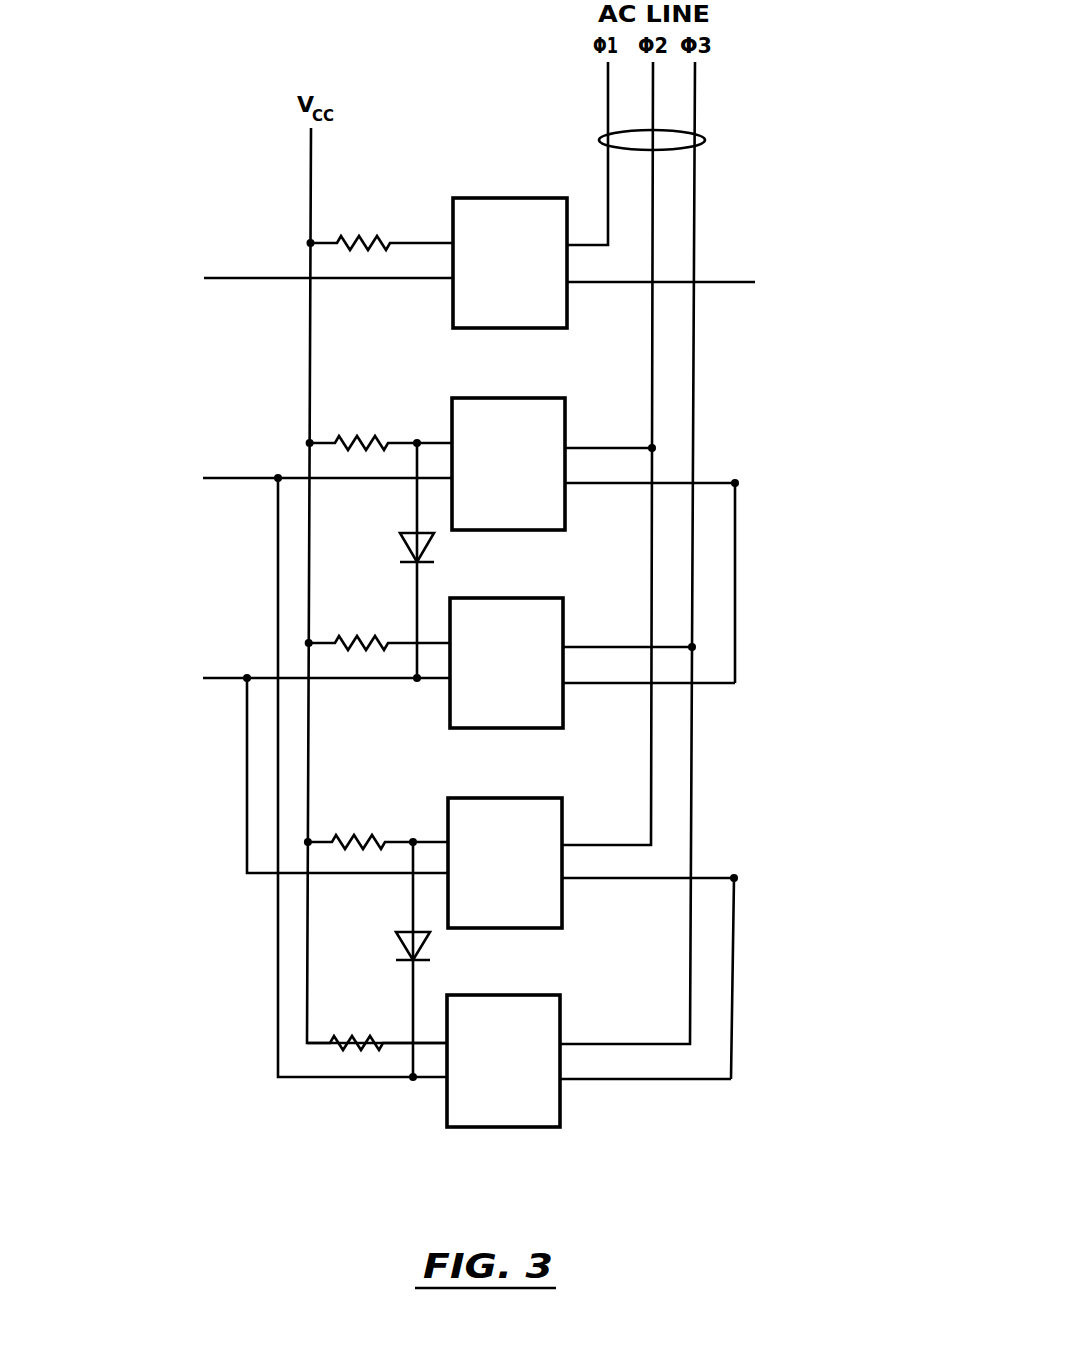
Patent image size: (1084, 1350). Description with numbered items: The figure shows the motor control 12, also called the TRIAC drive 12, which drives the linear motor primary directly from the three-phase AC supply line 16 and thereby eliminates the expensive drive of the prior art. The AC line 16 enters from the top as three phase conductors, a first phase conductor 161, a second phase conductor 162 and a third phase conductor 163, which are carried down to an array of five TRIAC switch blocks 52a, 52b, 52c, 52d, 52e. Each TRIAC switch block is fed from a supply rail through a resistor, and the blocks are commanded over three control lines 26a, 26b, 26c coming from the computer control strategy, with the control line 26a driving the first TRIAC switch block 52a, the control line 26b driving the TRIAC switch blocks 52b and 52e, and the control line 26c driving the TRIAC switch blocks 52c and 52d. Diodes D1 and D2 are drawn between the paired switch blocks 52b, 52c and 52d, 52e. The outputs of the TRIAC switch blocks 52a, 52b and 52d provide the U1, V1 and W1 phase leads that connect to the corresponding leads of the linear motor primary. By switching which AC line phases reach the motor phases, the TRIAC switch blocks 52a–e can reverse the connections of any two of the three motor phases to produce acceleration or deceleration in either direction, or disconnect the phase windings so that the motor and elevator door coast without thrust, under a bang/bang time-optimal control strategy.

The motor control 12 is at (799, 118).
The AC supply line 16 is at (703, 140).
The first phase conductor of AC line 161 is at (608, 167).
The second phase conductor of AC line 162 is at (653, 192).
The third phase conductor of AC line 163 is at (694, 236).
The control line 26a is at (280, 279).
The control line 26b is at (262, 480).
The control line 26c is at (240, 680).
The TRIAC switch block 52a is at (501, 198).
The TRIAC switch block 52b is at (504, 398).
The TRIAC switch block 52c is at (508, 598).
The TRIAC switch block 52d is at (499, 798).
The TRIAC switch block 52e is at (503, 995).
The diode D1 is at (400, 560).
The diode D2 is at (396, 959).